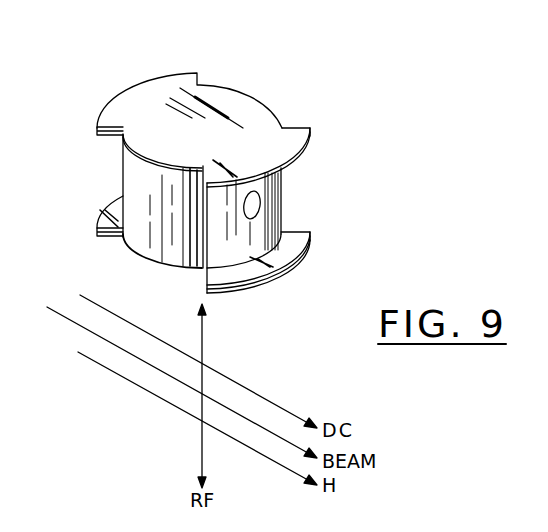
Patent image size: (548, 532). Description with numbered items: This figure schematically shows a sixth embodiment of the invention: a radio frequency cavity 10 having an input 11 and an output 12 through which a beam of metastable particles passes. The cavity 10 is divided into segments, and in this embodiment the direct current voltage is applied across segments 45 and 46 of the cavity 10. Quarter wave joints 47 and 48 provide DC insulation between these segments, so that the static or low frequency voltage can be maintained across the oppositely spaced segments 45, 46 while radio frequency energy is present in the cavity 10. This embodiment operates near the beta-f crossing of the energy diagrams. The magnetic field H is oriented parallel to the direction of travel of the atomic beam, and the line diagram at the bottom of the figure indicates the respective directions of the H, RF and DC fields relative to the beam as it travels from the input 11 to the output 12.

The radio frequency cavity 10 is at (243, 70).
The input 11 is at (84, 103).
The output 12 is at (260, 204).
The segment 45 is at (291, 127).
The segment 46 is at (153, 78).
The quarter wave joint 47 is at (305, 148).
The quarter wave joint 48 is at (100, 135).